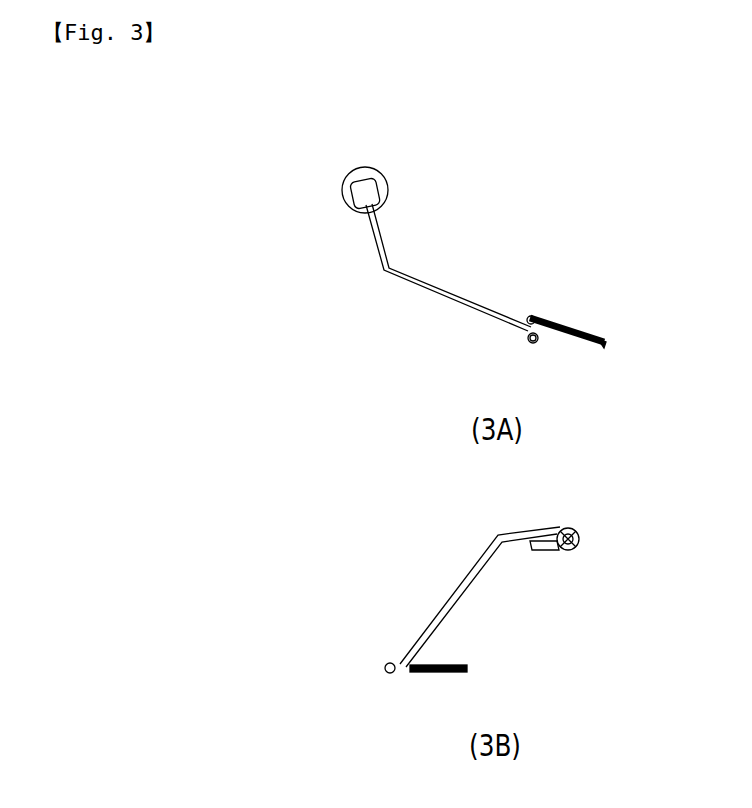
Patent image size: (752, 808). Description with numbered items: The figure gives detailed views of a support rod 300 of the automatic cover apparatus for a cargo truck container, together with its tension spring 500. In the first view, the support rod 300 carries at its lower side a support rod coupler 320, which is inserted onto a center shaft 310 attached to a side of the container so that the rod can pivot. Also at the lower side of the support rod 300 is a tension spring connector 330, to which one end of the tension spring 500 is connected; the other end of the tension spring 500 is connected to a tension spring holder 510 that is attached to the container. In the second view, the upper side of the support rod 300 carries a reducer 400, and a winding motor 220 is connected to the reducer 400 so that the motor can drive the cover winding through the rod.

In FIG. 3A, the support rod 300 is at (428, 294).
In FIG. 3B, the support rod 300 is at (450, 592).
In FIG. 3A, the center shaft 310 is at (539, 343).
In FIG. 3A, the support rod coupler 320 is at (527, 340).
In FIG. 3A, the tension spring connector 330 is at (522, 316).
In FIG. 3A, the tension spring 500 is at (566, 330).
In FIG. 3A, the tension spring holder 510 is at (608, 340).
In FIG. 3B, the reducer 400 is at (575, 527).
In FIG. 3B, the winding motor 220 is at (543, 550).